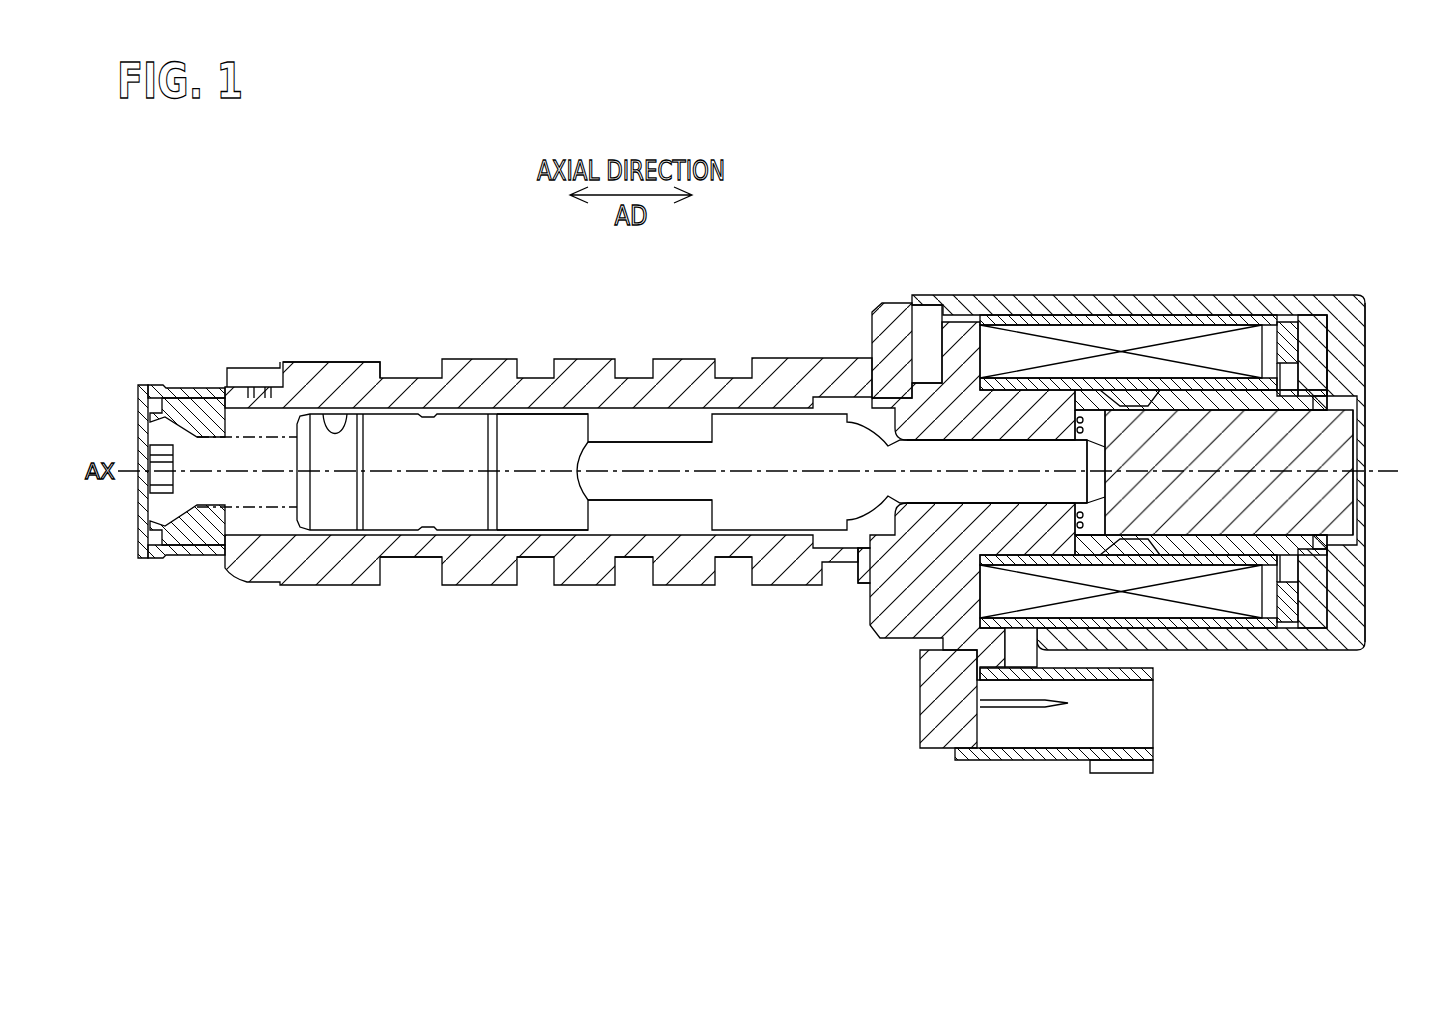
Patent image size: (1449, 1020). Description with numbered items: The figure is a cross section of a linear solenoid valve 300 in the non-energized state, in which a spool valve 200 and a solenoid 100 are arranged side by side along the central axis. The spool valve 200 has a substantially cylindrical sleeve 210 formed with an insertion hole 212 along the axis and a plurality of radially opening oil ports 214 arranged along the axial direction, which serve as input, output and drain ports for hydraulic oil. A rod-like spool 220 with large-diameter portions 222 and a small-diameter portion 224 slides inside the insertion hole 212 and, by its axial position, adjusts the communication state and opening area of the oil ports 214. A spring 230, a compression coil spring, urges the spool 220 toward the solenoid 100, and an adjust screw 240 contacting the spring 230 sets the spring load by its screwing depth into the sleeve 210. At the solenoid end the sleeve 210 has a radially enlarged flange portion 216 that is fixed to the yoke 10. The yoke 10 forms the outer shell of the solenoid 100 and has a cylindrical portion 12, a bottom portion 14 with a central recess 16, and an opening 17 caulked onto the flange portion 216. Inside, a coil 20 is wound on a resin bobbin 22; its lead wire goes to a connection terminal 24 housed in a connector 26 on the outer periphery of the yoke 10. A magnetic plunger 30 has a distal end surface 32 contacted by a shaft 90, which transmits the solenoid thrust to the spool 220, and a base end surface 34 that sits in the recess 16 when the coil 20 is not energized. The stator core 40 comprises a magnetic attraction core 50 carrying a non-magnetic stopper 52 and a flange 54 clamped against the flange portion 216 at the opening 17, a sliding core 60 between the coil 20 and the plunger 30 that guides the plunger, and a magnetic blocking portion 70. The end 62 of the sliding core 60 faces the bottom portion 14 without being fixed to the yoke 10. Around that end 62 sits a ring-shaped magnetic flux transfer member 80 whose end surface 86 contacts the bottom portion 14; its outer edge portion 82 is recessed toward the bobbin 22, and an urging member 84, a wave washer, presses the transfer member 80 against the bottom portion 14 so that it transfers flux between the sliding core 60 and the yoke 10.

The yoke 10 is at (1380, 284).
The cylindrical portion 12 is at (978, 305).
The bottom portion 14 is at (1358, 382).
The recess 16 is at (1333, 446).
The opening 17 is at (883, 330).
The coil 20 is at (1193, 596).
The bobbin 22 is at (1266, 627).
The connection terminal 24 is at (1040, 710).
The connector 26 is at (1174, 771).
The plunger 30 is at (1321, 506).
The distal end surface 32 is at (1093, 412).
The base end surface 34 is at (1360, 487).
The stator core 40 is at (1273, 200).
The magnetic attraction core 50 is at (1043, 412).
The stopper 52 is at (1095, 525).
The flange 54 is at (921, 318).
The sliding core 60 is at (1238, 400).
The end 62 is at (1315, 413).
The magnetic blocking portion 70 is at (1135, 410).
The magnetic flux transfer member 80 is at (1321, 572).
The outer edge portion 82 is at (1288, 325).
The urging member 84 is at (1284, 623).
The end surface 86 is at (1334, 345).
The shaft 90 is at (860, 565).
The solenoid 100 is at (1372, 831).
The spool valve 200 is at (133, 831).
The sleeve 210 is at (478, 388).
The insertion hole 212 is at (333, 440).
The oil ports 214 is at (720, 590).
The flange portion 216 is at (895, 612).
The spool 220 is at (773, 447).
The large-diameter portions 222 is at (537, 443).
The small-diameter portion 224 is at (637, 453).
The spring 230 is at (235, 437).
The adjust screw 240 is at (175, 427).
The linear solenoid valve 300 is at (388, 220).